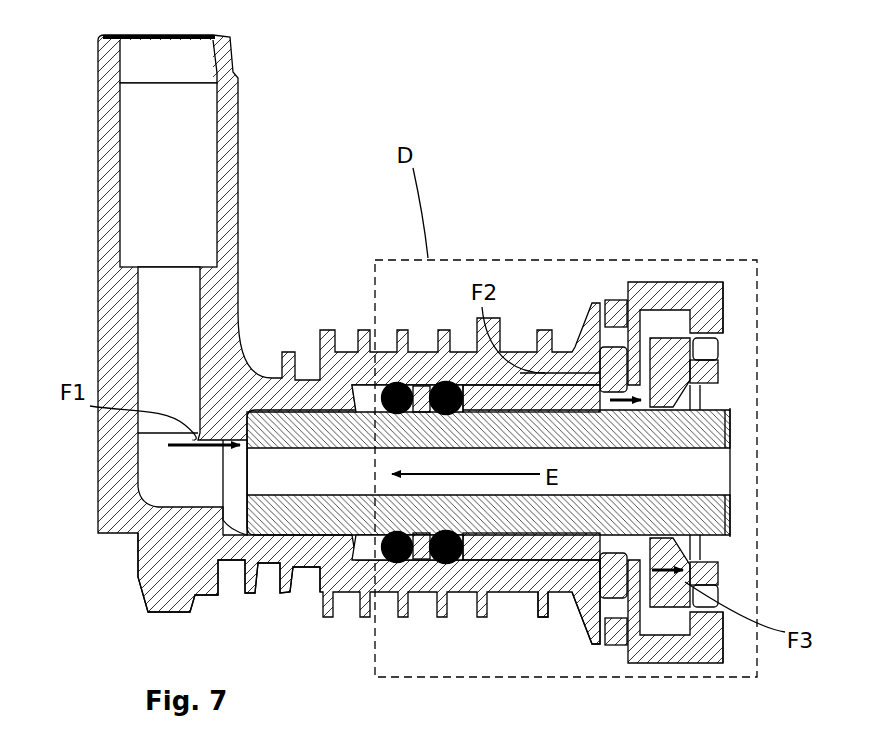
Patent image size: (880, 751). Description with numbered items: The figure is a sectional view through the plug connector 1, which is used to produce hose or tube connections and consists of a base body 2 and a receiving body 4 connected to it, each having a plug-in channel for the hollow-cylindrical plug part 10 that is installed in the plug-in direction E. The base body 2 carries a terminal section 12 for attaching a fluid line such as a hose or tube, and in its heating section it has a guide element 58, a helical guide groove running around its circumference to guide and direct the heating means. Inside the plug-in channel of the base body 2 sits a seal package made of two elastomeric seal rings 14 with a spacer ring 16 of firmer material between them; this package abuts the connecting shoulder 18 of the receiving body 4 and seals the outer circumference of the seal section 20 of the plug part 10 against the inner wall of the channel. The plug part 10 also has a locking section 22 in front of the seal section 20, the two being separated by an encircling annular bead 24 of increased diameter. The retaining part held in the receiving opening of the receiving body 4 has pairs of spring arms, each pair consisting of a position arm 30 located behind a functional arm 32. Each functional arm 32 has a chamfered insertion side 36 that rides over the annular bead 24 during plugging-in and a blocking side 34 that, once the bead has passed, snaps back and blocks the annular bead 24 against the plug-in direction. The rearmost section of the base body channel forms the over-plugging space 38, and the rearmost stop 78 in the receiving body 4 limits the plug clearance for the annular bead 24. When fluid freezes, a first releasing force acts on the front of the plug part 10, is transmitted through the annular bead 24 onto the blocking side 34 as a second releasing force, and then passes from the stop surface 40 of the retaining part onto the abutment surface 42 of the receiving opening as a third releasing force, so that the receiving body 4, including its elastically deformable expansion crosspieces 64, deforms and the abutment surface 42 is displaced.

The plug connector 1 is at (497, 206).
The base body 2 is at (458, 382).
The receiving body 4 is at (726, 290).
The plug part 10 is at (733, 440).
The terminal section 12 is at (118, 214).
The seal rings 14 is at (381, 562).
The spacer ring 16 is at (413, 388).
The connecting shoulder 18 is at (540, 590).
The seal section 20 is at (293, 517).
The locking section 22 is at (733, 405).
The annular bead 24 is at (597, 385).
The position arm 30 is at (620, 392).
The functional arm 32 is at (705, 312).
The blocking side 34 is at (641, 366).
The insertion side 36 is at (702, 382).
The over-plugging space 38 is at (237, 470).
The stop surface 40 is at (768, 456).
The abutment surface 42 is at (722, 350).
The guide element 58 is at (337, 333).
The expansion crosspiece 64 is at (678, 292).
The rearmost stop 78 is at (616, 590).